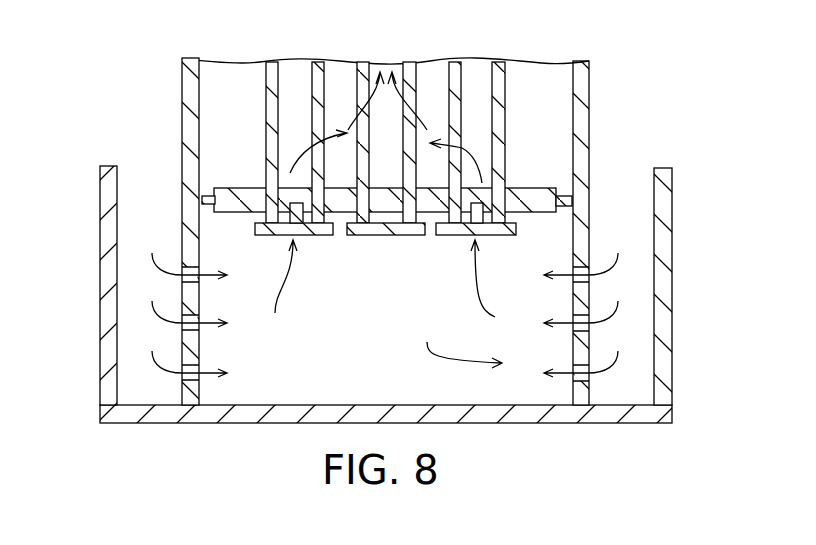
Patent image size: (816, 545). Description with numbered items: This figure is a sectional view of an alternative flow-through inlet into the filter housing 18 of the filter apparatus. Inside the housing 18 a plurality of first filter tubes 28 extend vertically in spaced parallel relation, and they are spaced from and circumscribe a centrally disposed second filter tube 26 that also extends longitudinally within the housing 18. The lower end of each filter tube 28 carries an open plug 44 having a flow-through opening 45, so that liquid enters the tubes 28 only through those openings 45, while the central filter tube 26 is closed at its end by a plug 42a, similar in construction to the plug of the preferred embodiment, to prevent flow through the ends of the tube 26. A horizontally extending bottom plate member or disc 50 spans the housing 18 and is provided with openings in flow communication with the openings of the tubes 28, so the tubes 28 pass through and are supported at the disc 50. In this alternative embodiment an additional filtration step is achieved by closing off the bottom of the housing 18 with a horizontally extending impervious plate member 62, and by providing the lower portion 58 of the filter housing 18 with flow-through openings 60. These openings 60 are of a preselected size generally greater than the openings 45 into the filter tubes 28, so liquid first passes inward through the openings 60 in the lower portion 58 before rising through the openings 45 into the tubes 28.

The filter housing 18 is at (589, 120).
The second filter tube 26 is at (425, 65).
The first filter tubes 28 is at (505, 88).
The plugs 42a is at (372, 236).
The open plug 44 is at (317, 236).
The flow-through opening 45 is at (285, 236).
The bottom plate member or disc 50 is at (538, 189).
The lower portion of the filter housing 58 is at (182, 298).
The flow-through openings 60 is at (182, 266).
The impervious plate member 62 is at (522, 423).